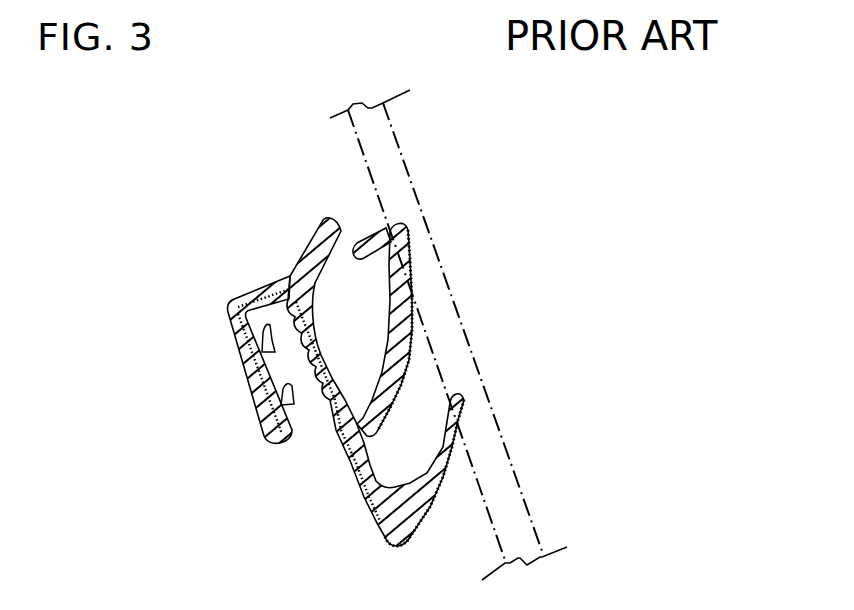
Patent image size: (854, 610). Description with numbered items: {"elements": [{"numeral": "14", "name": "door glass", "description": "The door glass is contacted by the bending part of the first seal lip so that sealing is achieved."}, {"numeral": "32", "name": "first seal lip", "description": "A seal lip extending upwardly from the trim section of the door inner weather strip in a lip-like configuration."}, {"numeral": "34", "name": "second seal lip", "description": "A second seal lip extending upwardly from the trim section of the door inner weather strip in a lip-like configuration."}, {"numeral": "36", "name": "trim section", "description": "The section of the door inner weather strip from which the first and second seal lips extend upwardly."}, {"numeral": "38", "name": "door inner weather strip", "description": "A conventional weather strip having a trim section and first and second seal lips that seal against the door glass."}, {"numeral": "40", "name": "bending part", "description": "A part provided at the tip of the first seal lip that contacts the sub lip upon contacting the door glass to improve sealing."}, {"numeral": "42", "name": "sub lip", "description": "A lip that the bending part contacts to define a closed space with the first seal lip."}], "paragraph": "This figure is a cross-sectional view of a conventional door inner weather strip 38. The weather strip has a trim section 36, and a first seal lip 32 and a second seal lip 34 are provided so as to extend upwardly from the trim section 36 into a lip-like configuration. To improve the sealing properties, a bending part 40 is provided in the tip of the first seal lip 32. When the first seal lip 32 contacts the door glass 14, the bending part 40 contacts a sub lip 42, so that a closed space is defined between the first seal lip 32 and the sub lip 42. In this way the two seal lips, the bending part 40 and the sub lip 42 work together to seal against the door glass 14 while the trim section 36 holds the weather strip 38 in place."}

The panel 14 is at (423, 207).
The body portion 32 is at (410, 327).
The hook portion 34 is at (452, 455).
The bracket portion 36 is at (247, 370).
The insertion direction 38 is at (232, 442).
The projection 40 is at (366, 229).
The arm portion 42 is at (310, 224).